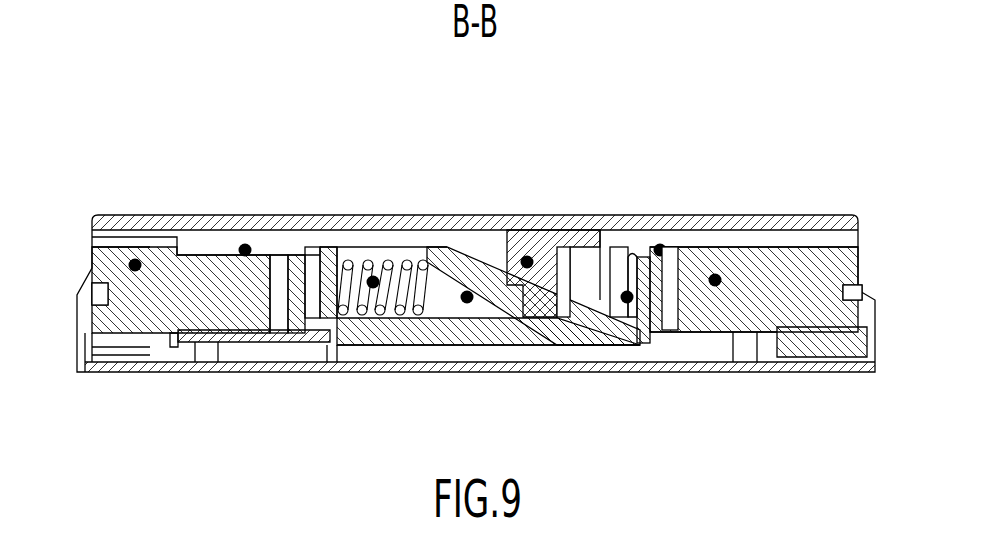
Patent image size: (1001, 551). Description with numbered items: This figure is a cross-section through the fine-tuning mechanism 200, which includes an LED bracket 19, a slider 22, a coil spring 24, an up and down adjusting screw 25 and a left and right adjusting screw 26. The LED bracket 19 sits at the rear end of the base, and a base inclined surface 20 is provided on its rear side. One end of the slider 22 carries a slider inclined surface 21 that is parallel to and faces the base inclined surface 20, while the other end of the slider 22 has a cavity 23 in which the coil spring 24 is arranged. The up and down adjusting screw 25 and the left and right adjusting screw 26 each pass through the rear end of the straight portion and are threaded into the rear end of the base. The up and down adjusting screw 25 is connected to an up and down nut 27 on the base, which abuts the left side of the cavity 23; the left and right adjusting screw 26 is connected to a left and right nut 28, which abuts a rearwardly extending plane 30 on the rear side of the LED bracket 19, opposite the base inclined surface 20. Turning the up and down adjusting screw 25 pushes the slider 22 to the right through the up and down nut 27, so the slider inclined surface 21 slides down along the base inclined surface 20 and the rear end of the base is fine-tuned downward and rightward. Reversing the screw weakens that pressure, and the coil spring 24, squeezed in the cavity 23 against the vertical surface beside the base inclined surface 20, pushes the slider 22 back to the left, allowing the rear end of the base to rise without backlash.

The fine-tuning mechanism 200 is at (910, 35).
The LED bracket 19 is at (468, 332).
The base inclined surface 20 is at (467, 297).
The slider inclined surface 21 is at (340, 347).
The slider 22 is at (527, 262).
The cavity 23 is at (340, 262).
The coil spring 24 is at (373, 282).
The up and down adjusting screw 25 is at (135, 265).
The left and right adjusting screw 26 is at (715, 280).
The up and down nut 27 is at (245, 250).
The left and right nut 28 is at (660, 250).
The rearwardly extending plane 30 is at (627, 297).